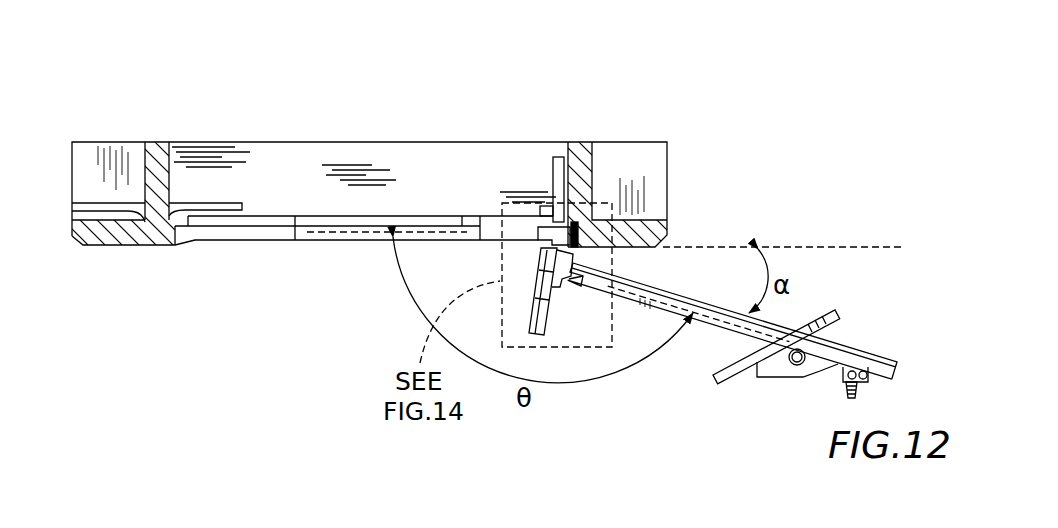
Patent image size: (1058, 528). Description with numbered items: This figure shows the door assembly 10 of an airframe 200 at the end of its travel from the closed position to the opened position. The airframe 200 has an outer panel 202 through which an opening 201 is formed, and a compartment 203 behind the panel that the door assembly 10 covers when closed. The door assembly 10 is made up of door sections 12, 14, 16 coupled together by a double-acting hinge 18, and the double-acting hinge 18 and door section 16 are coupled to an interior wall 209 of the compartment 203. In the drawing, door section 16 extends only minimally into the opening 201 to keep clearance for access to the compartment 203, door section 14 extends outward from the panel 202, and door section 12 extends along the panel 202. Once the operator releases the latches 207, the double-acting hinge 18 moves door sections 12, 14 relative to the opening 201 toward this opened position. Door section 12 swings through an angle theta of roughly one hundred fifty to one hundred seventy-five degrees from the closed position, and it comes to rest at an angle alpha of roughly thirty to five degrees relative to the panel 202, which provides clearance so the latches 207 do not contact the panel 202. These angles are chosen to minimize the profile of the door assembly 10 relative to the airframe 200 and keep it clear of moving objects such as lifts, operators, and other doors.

The airframe 200 is at (185, 118).
The compartment 203 is at (322, 163).
The opening 201 is at (168, 229).
The interior wall 209 is at (597, 173).
The door section 16 is at (549, 180).
The double-acting hinge 18 is at (535, 216).
The door section 14 is at (531, 273).
The door assembly 10 is at (651, 258).
The outer panel 202 is at (690, 288).
The door section 12 is at (795, 319).
The latches 207 is at (790, 378).